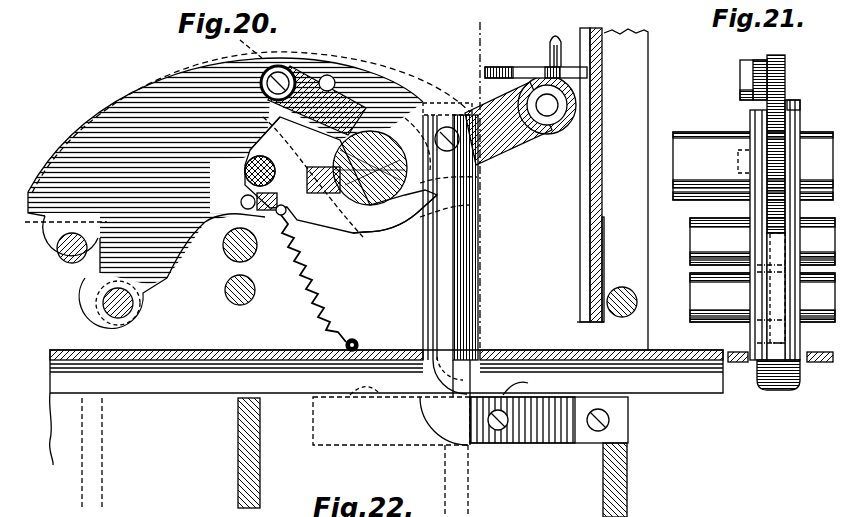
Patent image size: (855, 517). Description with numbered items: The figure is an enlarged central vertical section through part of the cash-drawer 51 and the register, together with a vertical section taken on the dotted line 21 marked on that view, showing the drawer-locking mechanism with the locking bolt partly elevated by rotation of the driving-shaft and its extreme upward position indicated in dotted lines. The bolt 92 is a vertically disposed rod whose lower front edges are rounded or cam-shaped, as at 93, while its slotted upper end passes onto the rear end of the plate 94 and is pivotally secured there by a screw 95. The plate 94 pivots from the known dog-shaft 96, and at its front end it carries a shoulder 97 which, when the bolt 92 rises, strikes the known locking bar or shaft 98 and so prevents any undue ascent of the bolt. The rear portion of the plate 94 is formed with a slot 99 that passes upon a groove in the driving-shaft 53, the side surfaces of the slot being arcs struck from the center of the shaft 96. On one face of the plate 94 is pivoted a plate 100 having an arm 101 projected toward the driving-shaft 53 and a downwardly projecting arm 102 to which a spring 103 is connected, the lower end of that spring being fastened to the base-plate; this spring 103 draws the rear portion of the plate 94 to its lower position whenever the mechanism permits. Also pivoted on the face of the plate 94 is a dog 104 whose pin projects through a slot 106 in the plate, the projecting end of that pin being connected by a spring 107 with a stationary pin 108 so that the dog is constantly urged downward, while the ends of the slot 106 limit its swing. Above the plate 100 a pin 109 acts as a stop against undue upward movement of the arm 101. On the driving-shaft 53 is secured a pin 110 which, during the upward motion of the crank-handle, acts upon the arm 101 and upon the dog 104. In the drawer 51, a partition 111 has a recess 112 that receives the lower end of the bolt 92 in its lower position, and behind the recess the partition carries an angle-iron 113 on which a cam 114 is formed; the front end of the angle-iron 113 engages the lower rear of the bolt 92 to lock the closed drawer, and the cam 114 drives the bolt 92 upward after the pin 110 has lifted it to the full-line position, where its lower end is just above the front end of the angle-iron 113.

In FIG. 20, the section line 21 is at (487, 199).
In FIG. 20, the cash-drawer 51 is at (260, 453).
In FIG. 20, the main driving-shaft 53 is at (380, 127).
In FIG. 21, the main driving-shaft 53 is at (702, 132).
In FIG. 20, the bolt 92 is at (427, 268).
In FIG. 21, the bolt 92 is at (800, 336).
In FIG. 20, the cam-shaped lower end 93 is at (427, 398).
In FIG. 20, the plate 94 is at (300, 62).
In FIG. 21, the plate 94 is at (785, 74).
In FIG. 20, the screw 95 is at (480, 157).
In FIG. 20, the dog-shaft 96 is at (133, 303).
In FIG. 20, the shoulder 97 is at (45, 216).
In FIG. 20, the locking bar or shaft 98 is at (67, 270).
In FIG. 20, the slot 99 is at (368, 232).
In FIG. 20, the plate 100 is at (245, 169).
In FIG. 20, the arm 101 is at (285, 228).
In FIG. 20, the downwardly-projecting arm 102 is at (230, 227).
In FIG. 20, the spring 103 is at (320, 310).
In FIG. 20, the dog 104 is at (360, 100).
In FIG. 21, the dog 104 is at (760, 62).
In FIG. 20, the slot 106 is at (333, 78).
In FIG. 20, the spring 107 is at (275, 110).
In FIG. 20, the stationary pin 108 is at (241, 202).
In FIG. 20, the pin 109 is at (290, 140).
In FIG. 20, the pin 110 is at (332, 200).
In FIG. 20, the partition 111 is at (307, 395).
In FIG. 20, the recess 112 is at (437, 430).
In FIG. 20, the angle-iron 113 is at (620, 410).
In FIG. 20, the cam 114 is at (528, 383).